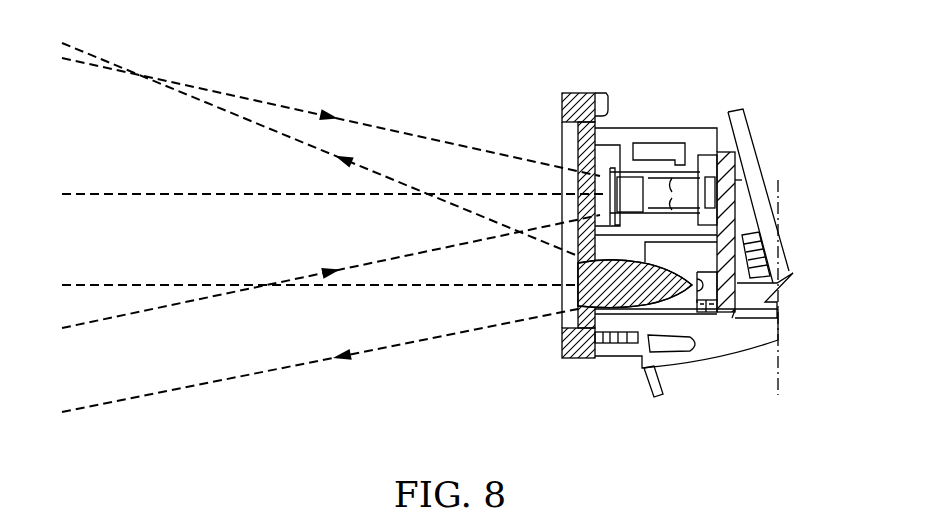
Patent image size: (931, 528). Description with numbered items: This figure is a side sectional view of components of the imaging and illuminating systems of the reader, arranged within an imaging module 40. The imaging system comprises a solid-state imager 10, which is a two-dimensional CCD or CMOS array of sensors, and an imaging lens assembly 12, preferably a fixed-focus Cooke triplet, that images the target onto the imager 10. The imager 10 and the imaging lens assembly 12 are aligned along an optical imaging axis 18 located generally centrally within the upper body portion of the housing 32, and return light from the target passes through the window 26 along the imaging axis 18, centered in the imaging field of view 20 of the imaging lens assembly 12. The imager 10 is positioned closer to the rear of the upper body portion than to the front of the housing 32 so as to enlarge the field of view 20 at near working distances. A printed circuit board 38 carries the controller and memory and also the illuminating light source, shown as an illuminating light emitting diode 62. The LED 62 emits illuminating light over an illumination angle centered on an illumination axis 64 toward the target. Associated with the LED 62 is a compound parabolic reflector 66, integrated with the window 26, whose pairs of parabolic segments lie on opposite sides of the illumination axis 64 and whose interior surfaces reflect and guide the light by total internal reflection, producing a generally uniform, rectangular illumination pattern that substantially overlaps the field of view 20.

The solid-state imager 10 is at (713, 176).
The imaging lens assembly 12 is at (673, 185).
The optical imaging axis 18 is at (148, 194).
The imaging field of view 20 is at (148, 78).
The window 26 is at (584, 100).
The housing 32 is at (563, 105).
The printed circuit board 38 is at (727, 297).
The imaging module 40 is at (724, 54).
The illuminating light emitting diode 62 is at (697, 303).
The illumination axis 64 is at (148, 285).
The compound parabolic reflector 66 is at (608, 295).